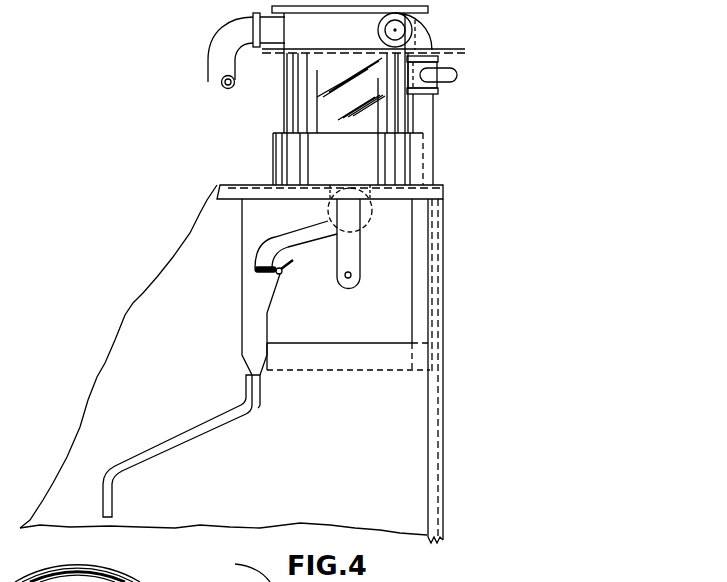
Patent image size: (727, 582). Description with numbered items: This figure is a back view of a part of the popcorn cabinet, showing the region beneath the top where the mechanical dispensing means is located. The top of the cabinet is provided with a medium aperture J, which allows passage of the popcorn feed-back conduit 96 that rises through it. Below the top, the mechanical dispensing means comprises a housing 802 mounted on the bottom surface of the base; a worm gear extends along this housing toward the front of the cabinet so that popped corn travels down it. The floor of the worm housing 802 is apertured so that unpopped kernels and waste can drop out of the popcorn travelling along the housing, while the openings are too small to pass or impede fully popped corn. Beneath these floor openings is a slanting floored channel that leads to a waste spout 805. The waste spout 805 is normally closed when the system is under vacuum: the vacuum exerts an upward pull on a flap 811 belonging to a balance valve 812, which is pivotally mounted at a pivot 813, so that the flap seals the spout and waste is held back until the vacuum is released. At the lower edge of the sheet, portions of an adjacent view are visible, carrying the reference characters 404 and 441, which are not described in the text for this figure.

The popcorn feed-back conduit 96 is at (428, 123).
The medium aperture J is at (432, 195).
The housing 802 is at (363, 226).
The waste spout 805 is at (293, 245).
The flap 811 is at (268, 273).
The balance valve 812 is at (290, 266).
The pivot 813 is at (290, 275).
The drum 404 is at (63, 580).
The ring 441 is at (157, 581).